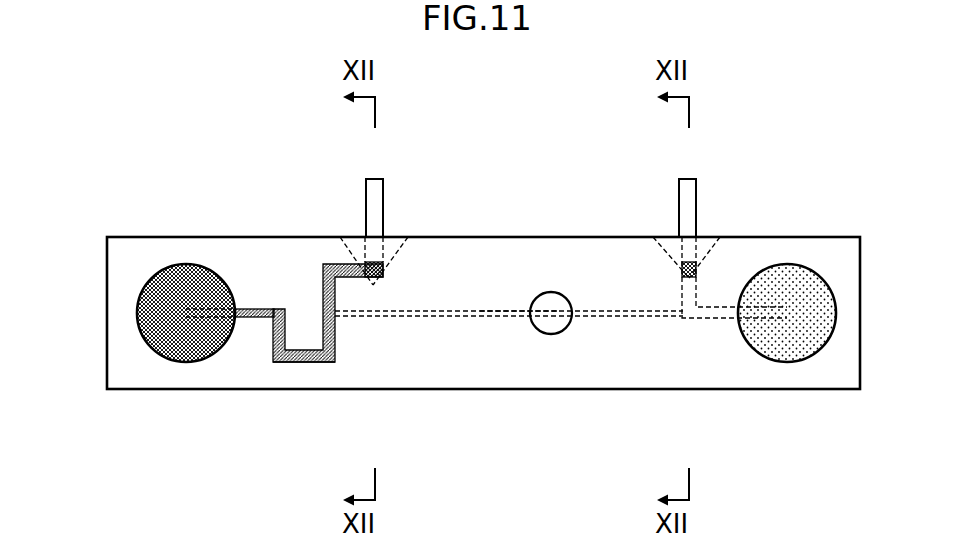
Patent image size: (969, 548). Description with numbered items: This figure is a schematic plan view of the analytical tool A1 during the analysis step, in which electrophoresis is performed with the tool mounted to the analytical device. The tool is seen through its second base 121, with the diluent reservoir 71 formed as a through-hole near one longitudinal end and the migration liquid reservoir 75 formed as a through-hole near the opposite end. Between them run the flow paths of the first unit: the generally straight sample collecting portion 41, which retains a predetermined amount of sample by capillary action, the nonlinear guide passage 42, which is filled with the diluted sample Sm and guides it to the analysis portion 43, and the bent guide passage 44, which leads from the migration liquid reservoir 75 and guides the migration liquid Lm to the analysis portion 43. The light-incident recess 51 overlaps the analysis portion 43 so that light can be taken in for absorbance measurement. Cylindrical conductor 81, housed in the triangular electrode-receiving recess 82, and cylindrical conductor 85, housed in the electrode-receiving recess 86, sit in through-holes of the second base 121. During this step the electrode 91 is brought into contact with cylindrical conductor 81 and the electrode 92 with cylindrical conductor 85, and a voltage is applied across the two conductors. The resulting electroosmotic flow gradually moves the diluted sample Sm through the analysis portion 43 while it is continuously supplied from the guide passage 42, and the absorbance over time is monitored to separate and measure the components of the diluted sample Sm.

The analytical tool A1 is at (117, 212).
The second base 121 is at (460, 250).
The diluent reservoir 71 is at (187, 283).
The migration liquid reservoir 75 is at (790, 290).
The sample collecting portion 41 is at (253, 318).
The guide passage 42 is at (300, 362).
The analysis portion 43 is at (433, 316).
The guide passage 44 is at (708, 318).
The light-incident recess 51 is at (553, 303).
The cylindrical conductor 81 is at (367, 250).
The electrode-receiving recess 82 is at (388, 250).
The cylindrical conductor 85 is at (684, 250).
The electrode-receiving recess 86 is at (700, 250).
The electrode 91 is at (378, 180).
The electrode 92 is at (692, 180).
The diluted sample Sm is at (290, 355).
The migration liquid Lm is at (600, 317).